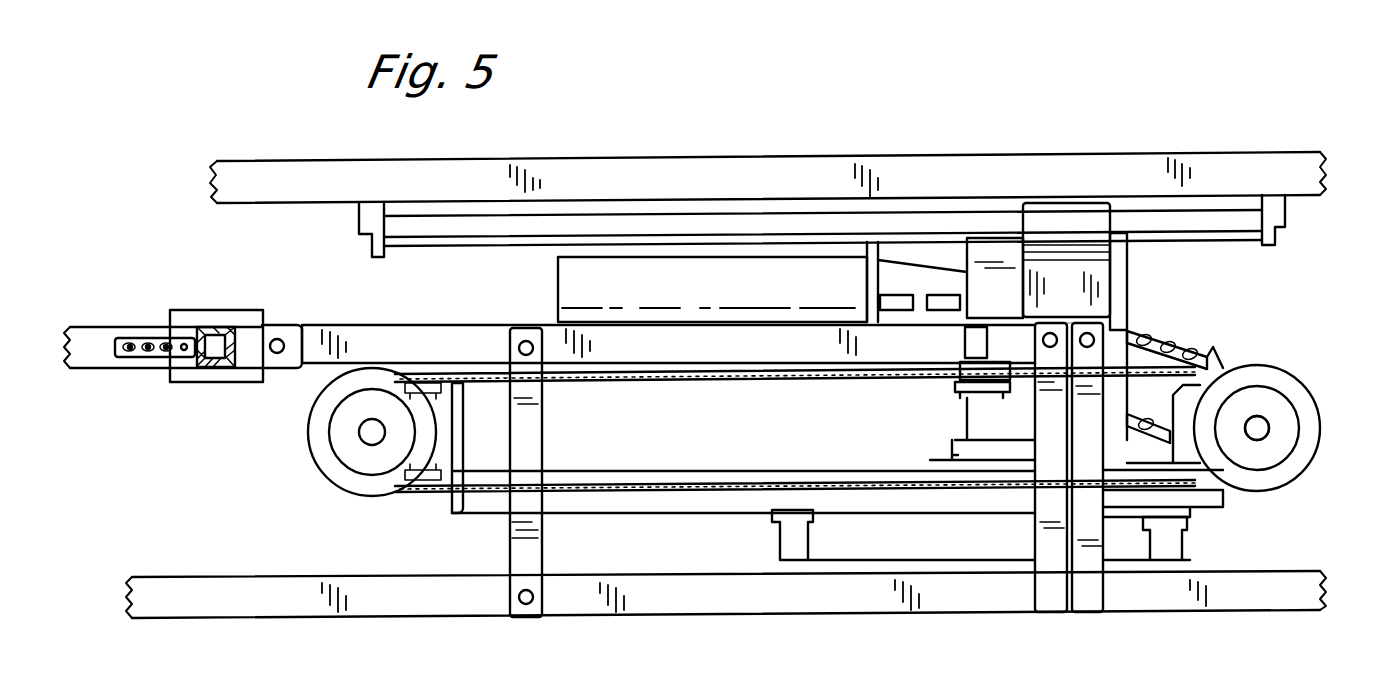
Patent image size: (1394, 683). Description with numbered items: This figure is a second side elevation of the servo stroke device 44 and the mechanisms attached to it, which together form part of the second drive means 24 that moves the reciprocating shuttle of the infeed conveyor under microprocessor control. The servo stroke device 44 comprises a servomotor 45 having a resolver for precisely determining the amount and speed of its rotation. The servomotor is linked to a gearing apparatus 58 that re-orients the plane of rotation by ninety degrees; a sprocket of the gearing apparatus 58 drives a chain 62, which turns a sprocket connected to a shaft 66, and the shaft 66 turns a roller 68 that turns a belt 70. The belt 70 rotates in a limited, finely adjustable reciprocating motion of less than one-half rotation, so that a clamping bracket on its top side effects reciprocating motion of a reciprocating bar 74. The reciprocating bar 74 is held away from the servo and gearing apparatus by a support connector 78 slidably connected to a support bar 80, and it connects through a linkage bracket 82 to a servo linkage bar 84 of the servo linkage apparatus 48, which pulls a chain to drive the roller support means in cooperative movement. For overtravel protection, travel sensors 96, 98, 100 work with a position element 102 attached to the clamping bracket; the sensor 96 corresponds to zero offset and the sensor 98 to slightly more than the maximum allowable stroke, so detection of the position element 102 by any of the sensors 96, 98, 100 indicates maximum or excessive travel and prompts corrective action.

The second drive means 24 is at (1200, 128).
The servo stroke device 44 is at (1225, 302).
The servomotor 45 is at (738, 306).
The servo linkage apparatus 48 is at (125, 380).
The gearing apparatus 58 is at (985, 250).
The chain 62 is at (1172, 342).
The shaft 66 is at (1257, 428).
The roller 68 is at (1310, 414).
The belt 70 is at (690, 386).
The reciprocating bar 74 is at (365, 350).
The support connector 78 is at (1060, 228).
The support bar 80 is at (612, 228).
The linkage bracket 82 is at (228, 378).
The servo linkage bar 84 is at (88, 340).
The travel sensor 96 is at (1052, 560).
The travel sensor 98 is at (518, 536).
The travel sensor 100 is at (1090, 580).
The position element 102 is at (967, 337).